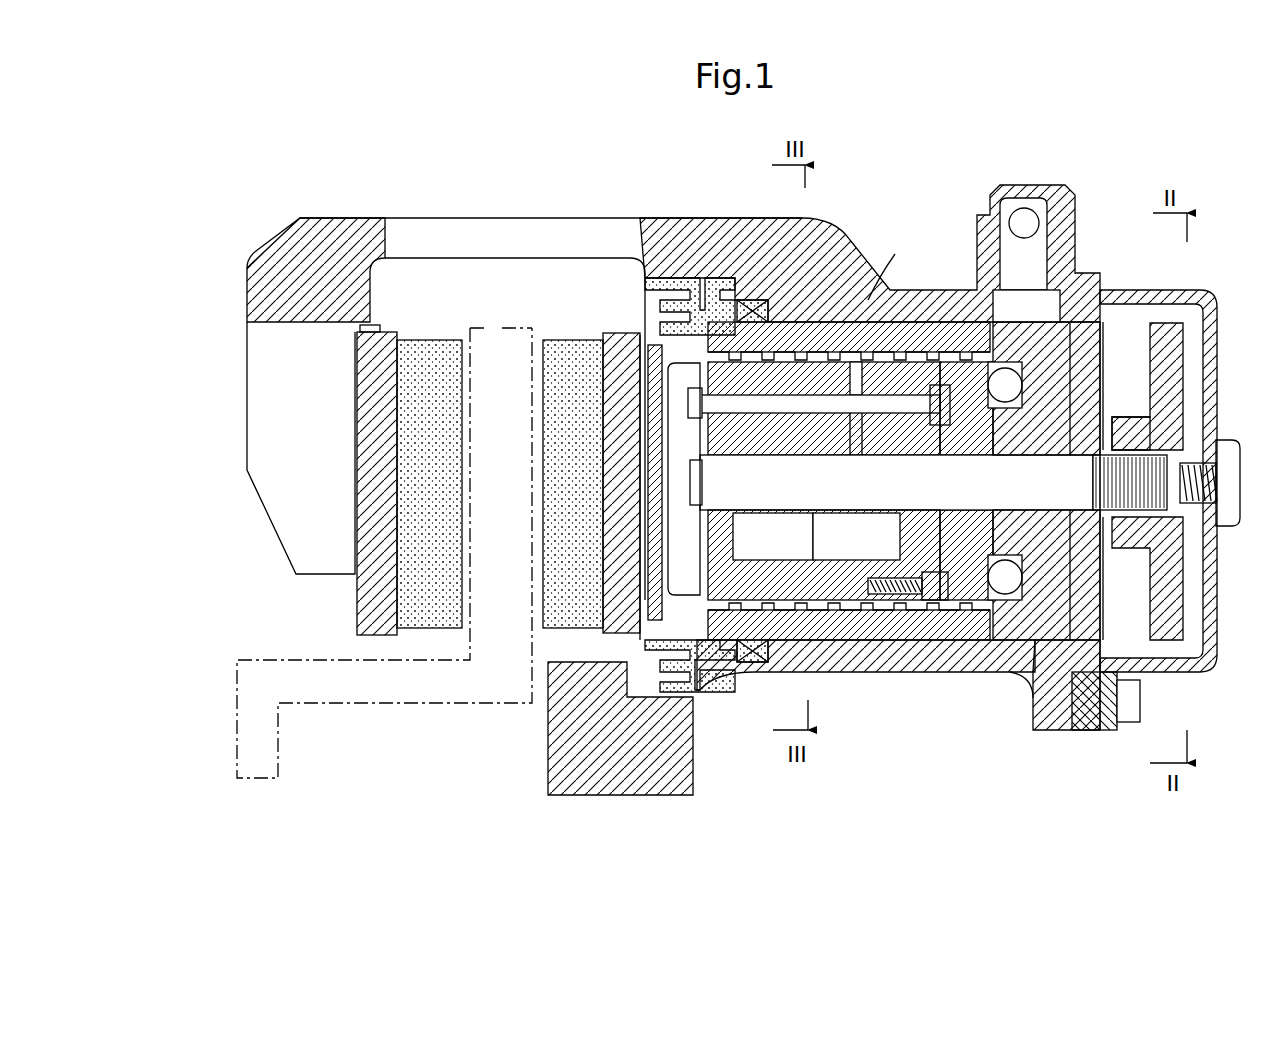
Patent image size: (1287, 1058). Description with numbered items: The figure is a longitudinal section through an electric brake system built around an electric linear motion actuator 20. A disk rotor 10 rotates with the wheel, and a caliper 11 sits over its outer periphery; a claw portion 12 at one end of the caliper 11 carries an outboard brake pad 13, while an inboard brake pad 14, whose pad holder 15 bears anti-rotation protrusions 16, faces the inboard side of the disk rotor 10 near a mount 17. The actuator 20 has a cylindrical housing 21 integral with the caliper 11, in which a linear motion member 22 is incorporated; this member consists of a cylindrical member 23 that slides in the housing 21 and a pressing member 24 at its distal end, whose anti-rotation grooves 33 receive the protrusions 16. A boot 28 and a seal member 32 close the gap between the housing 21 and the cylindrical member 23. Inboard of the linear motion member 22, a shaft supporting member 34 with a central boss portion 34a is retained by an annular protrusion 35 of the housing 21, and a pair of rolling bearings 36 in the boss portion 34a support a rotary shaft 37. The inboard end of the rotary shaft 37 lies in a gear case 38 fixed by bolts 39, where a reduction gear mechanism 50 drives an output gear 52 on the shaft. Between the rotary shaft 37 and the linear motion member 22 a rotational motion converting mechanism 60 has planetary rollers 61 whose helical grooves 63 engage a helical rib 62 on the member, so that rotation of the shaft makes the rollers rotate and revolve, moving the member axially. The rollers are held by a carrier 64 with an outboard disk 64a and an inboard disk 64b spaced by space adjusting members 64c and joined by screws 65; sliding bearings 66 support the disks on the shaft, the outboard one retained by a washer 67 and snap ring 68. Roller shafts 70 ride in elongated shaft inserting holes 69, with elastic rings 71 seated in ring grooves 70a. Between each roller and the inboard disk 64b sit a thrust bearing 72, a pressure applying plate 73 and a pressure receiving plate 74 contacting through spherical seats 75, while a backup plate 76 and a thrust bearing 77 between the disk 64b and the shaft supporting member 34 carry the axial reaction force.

The disk rotor 10 is at (494, 340).
The caliper 11 is at (308, 216).
The claw portion 12 is at (255, 405).
The outboard brake pad 13 is at (425, 348).
The inboard brake pad 14 is at (562, 352).
The pad holder 15 is at (612, 487).
The anti-rotation protrusions 16 is at (640, 570).
The mount 17 is at (599, 797).
The electric linear motion actuator 20 is at (820, 218).
The housing 21 is at (892, 263).
The linear motion member 22 is at (780, 340).
The cylindrical member 23 is at (640, 330).
The pressing member 24 is at (578, 658).
The boot 28 is at (670, 298).
The seal member 32 is at (752, 672).
The anti-rotation grooves 33 is at (630, 600).
The shaft supporting member 34 is at (1060, 355).
The boss portion 34a is at (1115, 432).
The annular protrusion 35 is at (1075, 632).
The rolling bearings 36 is at (1027, 507).
The rotary shaft 37 is at (790, 600).
The gear case 38 is at (1218, 330).
The bolts 39 is at (1125, 717).
The reduction gear mechanism 50 is at (1188, 372).
The output gear 52 is at (1178, 578).
The rotational motion converting mechanism 60 is at (800, 312).
The planetary rollers 61 is at (795, 452).
The helical rib 62 is at (745, 308).
The helical groove 63 is at (757, 445).
The carrier 64 is at (877, 600).
The outboard disk 64a is at (735, 548).
The inboard disk 64b is at (883, 541).
The space adjusting members 64c is at (832, 600).
The screws 65 is at (907, 600).
The sliding bearings 66 is at (690, 465).
The washer 67 is at (640, 542).
The snap ring 68 is at (640, 513).
The shaft inserting holes 69 is at (700, 425).
The roller shafts 70 is at (1003, 372).
The ring grooves 70a is at (735, 445).
The elastic rings 71 is at (700, 383).
The thrust bearing 72 is at (845, 440).
The pressure applying plate 73 is at (872, 437).
The pressure receiving plate 74 is at (890, 400).
The spherical seats 75 is at (927, 432).
The backup plate 76 is at (985, 612).
The thrust bearing 77 is at (1012, 592).